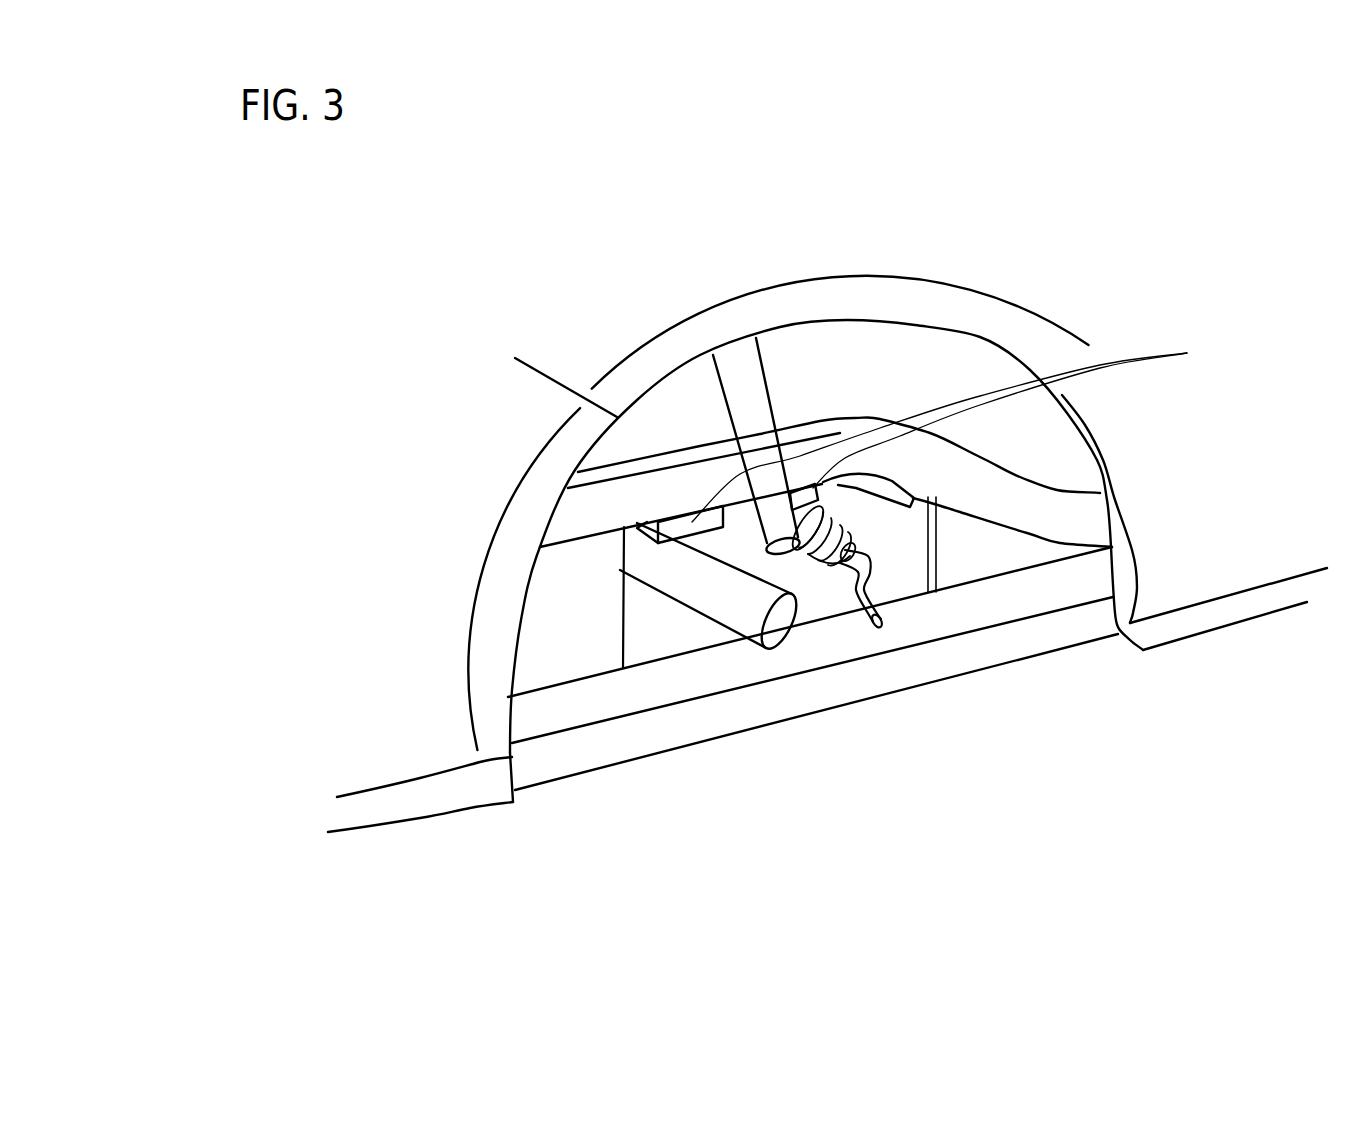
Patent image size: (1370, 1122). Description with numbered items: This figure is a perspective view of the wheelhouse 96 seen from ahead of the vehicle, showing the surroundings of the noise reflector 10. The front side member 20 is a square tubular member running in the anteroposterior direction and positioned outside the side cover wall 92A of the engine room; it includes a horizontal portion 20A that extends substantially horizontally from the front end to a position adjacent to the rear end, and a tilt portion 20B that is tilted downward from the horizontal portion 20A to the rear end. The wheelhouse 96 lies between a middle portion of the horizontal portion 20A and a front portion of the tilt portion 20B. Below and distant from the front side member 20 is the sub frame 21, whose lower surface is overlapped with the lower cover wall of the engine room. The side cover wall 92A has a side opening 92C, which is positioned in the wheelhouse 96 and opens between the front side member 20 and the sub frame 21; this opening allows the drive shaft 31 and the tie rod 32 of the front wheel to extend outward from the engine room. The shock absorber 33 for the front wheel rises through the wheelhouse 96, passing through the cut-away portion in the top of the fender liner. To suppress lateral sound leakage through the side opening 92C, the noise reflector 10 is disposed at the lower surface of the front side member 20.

The noise reflector 10 is at (953, 429).
The front side member 20 is at (1047, 545).
The horizontal portion 20A is at (687, 477).
The tilt portion 20B is at (1003, 493).
The sub frame 21 is at (955, 610).
The drive shaft 31 is at (700, 587).
The tie rod 32 is at (840, 570).
The shock absorber 33 is at (745, 380).
The cover wall 92A is at (555, 635).
The side opening 92C is at (873, 570).
The wheelhouse 96 is at (883, 358).